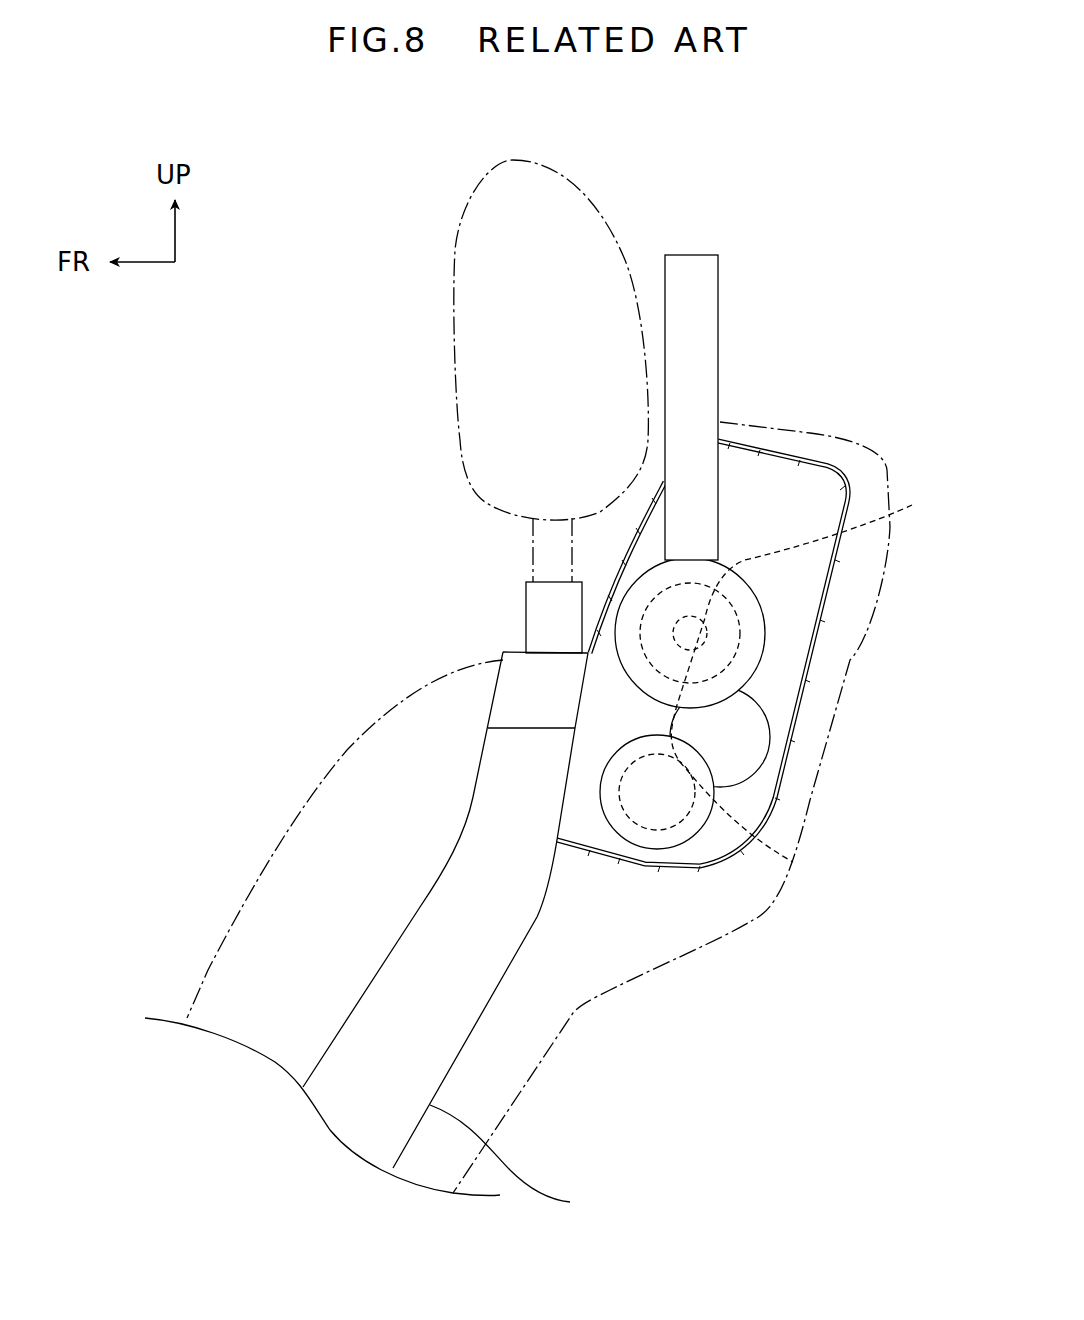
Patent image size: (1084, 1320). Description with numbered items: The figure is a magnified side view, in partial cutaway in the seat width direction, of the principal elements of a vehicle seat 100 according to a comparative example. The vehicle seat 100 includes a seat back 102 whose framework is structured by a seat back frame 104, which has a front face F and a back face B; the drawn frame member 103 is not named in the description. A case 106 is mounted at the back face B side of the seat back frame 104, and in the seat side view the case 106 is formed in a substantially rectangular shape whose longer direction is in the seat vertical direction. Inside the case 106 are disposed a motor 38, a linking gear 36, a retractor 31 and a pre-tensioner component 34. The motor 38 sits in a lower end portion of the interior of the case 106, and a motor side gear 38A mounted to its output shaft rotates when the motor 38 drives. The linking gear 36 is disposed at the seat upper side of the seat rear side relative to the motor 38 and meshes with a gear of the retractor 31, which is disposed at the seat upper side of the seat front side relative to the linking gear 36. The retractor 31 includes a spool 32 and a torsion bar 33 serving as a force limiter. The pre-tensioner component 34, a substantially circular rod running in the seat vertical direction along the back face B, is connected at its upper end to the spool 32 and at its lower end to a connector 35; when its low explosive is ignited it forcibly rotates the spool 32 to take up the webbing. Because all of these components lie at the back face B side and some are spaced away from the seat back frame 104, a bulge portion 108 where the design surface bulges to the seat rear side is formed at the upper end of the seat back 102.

The vehicle seat 100 is at (340, 558).
The seat back 102 is at (228, 856).
The seat back frame 103 is at (412, 907).
The seat back frame 104 is at (484, 1014).
The case 106 is at (808, 462).
The bulge portion 108 is at (805, 808).
The retractor 31 is at (765, 597).
The spool 32 is at (765, 633).
The torsion bar 33 is at (705, 640).
The pre-tensioner component 34 is at (720, 345).
The connector 35 is at (807, 667).
The linking gear 36 is at (768, 722).
The motor 38 is at (702, 838).
The motor side gear 38A is at (793, 862).
The front face F is at (338, 1032).
The back face B is at (512, 1162).